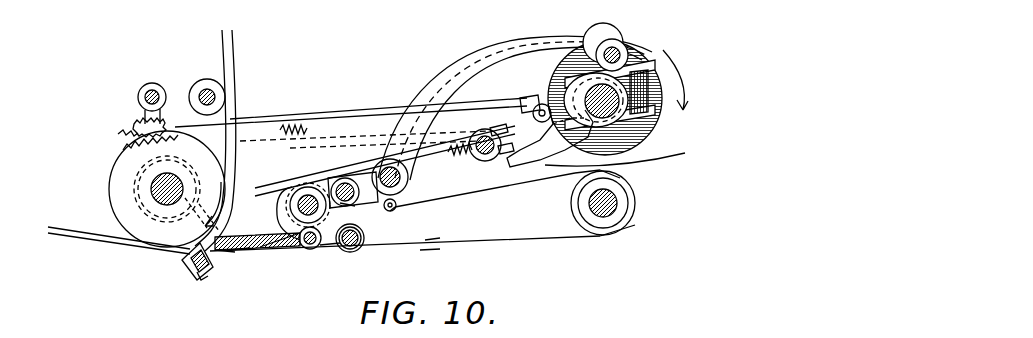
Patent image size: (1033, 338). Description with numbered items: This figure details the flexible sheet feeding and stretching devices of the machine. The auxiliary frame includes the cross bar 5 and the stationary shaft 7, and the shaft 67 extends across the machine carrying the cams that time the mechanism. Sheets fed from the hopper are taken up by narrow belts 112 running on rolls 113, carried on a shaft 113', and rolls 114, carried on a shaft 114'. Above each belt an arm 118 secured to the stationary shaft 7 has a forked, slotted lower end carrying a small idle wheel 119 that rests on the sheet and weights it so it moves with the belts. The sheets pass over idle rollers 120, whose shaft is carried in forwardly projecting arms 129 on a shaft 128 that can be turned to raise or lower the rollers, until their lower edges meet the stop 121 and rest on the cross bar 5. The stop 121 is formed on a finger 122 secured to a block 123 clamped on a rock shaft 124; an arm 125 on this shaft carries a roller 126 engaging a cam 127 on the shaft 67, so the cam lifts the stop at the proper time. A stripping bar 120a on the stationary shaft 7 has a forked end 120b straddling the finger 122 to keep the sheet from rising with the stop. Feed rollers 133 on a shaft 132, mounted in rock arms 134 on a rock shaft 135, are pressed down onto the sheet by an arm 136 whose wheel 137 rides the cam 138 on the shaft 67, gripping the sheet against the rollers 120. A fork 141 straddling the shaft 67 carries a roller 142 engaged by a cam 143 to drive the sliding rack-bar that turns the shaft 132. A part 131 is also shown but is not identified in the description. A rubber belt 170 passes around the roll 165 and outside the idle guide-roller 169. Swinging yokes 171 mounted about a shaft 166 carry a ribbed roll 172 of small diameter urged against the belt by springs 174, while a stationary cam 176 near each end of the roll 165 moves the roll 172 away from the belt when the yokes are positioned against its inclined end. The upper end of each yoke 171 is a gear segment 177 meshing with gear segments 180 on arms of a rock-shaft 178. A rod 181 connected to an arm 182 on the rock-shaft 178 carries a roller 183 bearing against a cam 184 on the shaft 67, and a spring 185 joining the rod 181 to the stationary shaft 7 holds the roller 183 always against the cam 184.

The cross bar 5 is at (237, 251).
The stationary shaft 7 is at (480, 135).
The shaft 67 is at (662, 78).
The narrow belts 112 is at (453, 182).
The rolls 113 is at (671, 212).
The shaft 113' is at (677, 237).
The rolls 114 is at (458, 268).
The shaft 114' is at (465, 252).
The arm 118 is at (486, 185).
The idle wheel 119 is at (396, 206).
The rollers 120 is at (312, 248).
The bar 120a is at (292, 207).
The forked end 120b is at (263, 247).
The stop 121 is at (240, 250).
The finger 122 is at (331, 190).
The block 123 is at (340, 203).
The rock shaft 124 is at (338, 175).
The arm 125 is at (432, 78).
The roller 126 is at (608, 58).
The cam 127 is at (665, 92).
The shaft 128 is at (360, 250).
The arms 129 is at (340, 250).
The link 131 is at (360, 247).
The shaft 132 is at (297, 175).
The feed rollers 133 is at (297, 170).
The rock arms 134 is at (330, 170).
The rock shaft 135 is at (348, 178).
The arm 136 is at (437, 103).
The wheel 137 is at (625, 42).
The cam 138 is at (590, 72).
The fork 141 is at (620, 180).
The roller 142 is at (522, 112).
The cam 143 is at (600, 170).
The roll 165 is at (157, 200).
The shaft 166 is at (150, 230).
The idle guide-roller 169 is at (209, 83).
The belt 170 is at (230, 62).
The swinging yokes 171 is at (195, 262).
The roll 172 is at (192, 272).
The springs 174 is at (200, 280).
The stationary cam 176 is at (226, 238).
The gear segment 177 is at (126, 143).
The rock-shaft 178 is at (143, 92).
The gear segments 180 is at (126, 128).
The rod 181 is at (282, 122).
The arm 182 is at (138, 121).
The roller 183 is at (540, 100).
The cam 184 is at (660, 108).
The spring 185 is at (300, 128).